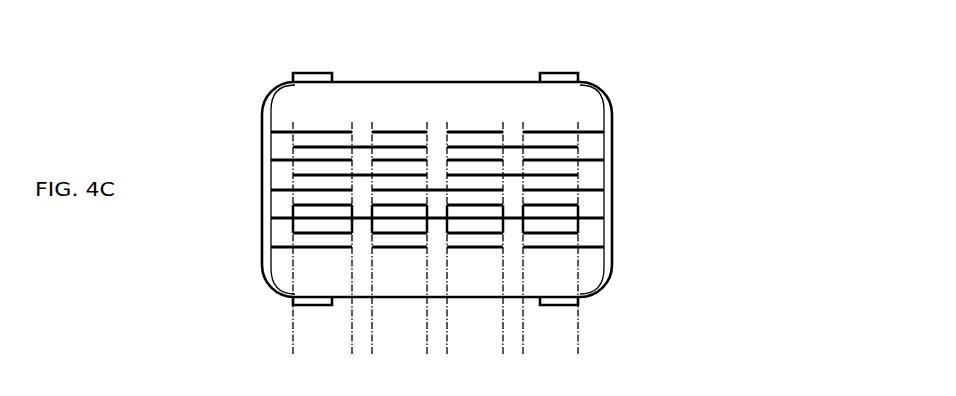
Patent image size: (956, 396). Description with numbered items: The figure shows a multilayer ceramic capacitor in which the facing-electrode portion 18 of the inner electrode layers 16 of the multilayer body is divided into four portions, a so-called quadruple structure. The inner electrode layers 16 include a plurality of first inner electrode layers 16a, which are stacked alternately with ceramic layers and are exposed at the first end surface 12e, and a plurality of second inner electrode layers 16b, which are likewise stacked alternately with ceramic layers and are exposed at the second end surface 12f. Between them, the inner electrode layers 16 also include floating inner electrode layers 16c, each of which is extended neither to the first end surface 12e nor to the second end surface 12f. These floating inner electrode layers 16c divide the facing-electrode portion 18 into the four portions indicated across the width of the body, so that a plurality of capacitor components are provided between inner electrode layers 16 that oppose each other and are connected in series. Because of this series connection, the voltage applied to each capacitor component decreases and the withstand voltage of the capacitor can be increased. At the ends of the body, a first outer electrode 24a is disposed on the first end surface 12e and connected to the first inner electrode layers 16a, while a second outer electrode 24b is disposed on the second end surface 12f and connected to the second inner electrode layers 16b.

The first end surface 12e is at (268, 168).
The second end surface 12f is at (606, 167).
The inner electrode layers 16 is at (502, 180).
The first inner electrode layers 16a is at (278, 160).
The second inner electrode layers 16b is at (592, 160).
The floating inner electrode layers 16c is at (335, 232).
The facing-electrode portion 18 is at (293, 343).
The first outer electrode 24a is at (293, 75).
The second outer electrode 24b is at (595, 83).